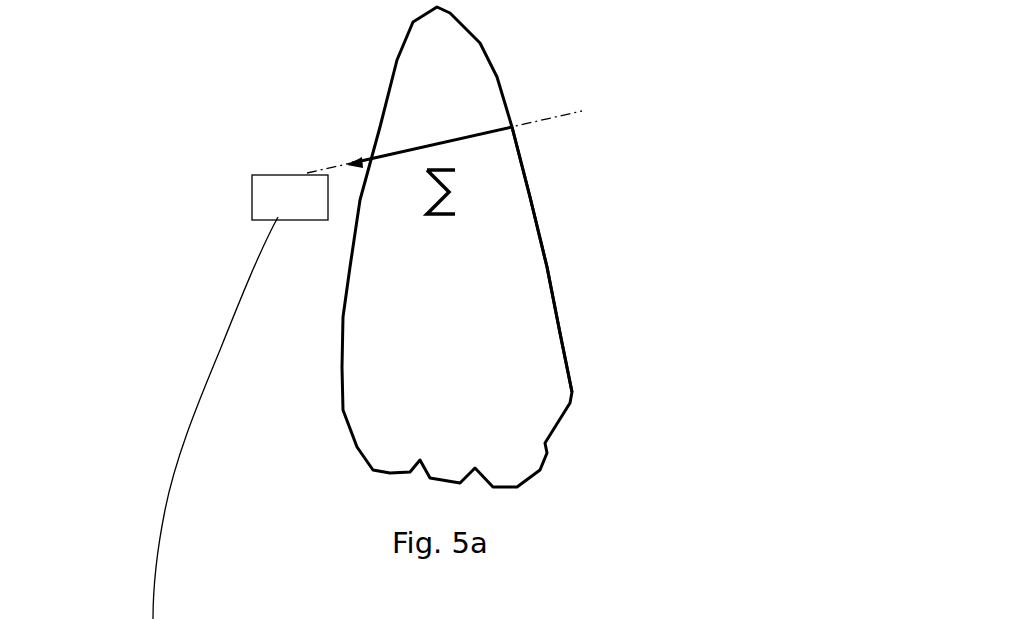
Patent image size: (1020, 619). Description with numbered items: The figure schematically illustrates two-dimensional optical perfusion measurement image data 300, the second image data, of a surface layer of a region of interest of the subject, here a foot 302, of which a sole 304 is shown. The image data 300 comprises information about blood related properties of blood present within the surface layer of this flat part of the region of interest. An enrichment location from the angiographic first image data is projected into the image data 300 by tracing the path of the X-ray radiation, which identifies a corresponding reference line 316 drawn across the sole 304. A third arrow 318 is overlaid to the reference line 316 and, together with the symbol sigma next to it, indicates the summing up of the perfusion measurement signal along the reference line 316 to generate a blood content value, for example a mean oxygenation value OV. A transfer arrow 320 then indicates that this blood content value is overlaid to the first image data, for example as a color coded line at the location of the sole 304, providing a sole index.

The 2D optical perfusion measurement image data 300 is at (505, 73).
The foot 302 is at (548, 273).
The sole 304 is at (540, 367).
The reference line 316 is at (522, 127).
The third arrow 318 is at (413, 150).
The transfer arrow 320 is at (217, 488).